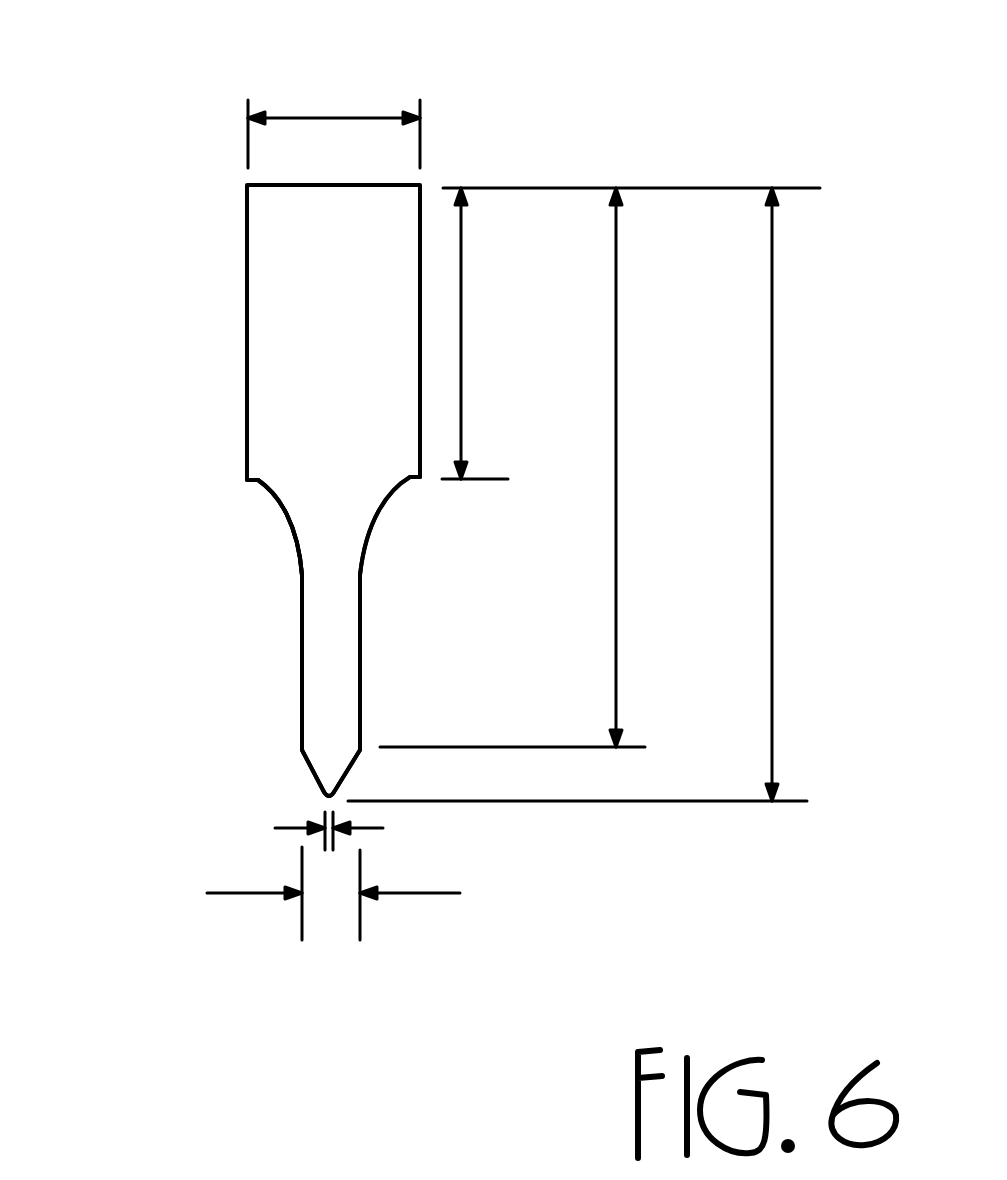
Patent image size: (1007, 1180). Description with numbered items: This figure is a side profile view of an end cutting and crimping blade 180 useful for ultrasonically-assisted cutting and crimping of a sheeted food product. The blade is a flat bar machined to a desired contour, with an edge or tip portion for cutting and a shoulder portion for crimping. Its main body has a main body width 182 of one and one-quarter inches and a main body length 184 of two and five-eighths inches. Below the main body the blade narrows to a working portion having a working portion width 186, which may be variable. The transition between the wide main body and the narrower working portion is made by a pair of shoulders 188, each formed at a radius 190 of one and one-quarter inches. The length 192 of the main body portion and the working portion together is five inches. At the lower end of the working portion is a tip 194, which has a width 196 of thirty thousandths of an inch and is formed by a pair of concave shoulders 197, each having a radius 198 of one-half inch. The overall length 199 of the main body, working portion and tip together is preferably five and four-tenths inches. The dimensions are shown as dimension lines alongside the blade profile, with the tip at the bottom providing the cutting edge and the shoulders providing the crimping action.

The end cutting and crimping blade 180 is at (476, 146).
The main body width 182 is at (335, 118).
The main body length 184 is at (461, 330).
The working portion width 186 is at (410, 893).
The shoulders 188 is at (262, 485).
The radius 190 is at (268, 513).
The length of main body portion and working portion 192 is at (616, 442).
The tip 194 is at (233, 804).
The tip width 196 is at (370, 827).
The concave shoulders 197 is at (306, 768).
The radius 198 is at (300, 782).
The overall length 199 is at (773, 452).